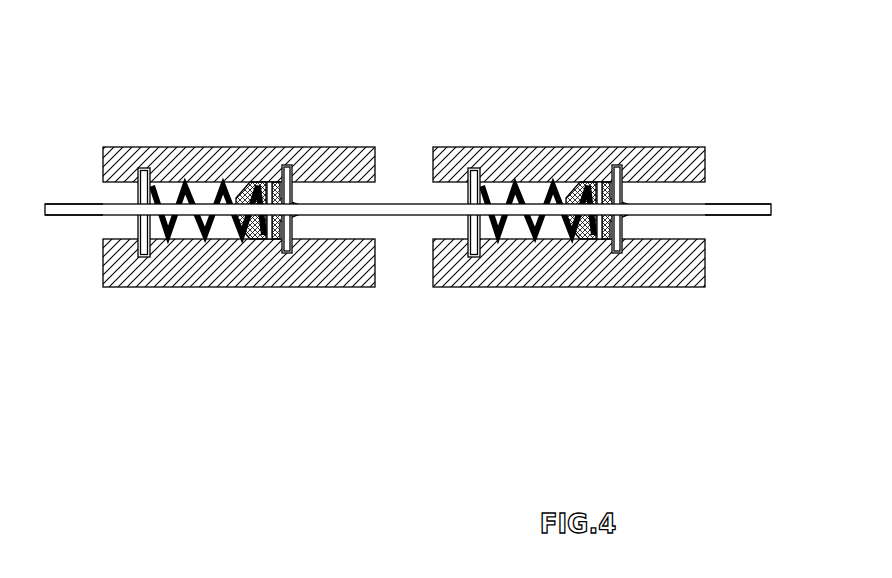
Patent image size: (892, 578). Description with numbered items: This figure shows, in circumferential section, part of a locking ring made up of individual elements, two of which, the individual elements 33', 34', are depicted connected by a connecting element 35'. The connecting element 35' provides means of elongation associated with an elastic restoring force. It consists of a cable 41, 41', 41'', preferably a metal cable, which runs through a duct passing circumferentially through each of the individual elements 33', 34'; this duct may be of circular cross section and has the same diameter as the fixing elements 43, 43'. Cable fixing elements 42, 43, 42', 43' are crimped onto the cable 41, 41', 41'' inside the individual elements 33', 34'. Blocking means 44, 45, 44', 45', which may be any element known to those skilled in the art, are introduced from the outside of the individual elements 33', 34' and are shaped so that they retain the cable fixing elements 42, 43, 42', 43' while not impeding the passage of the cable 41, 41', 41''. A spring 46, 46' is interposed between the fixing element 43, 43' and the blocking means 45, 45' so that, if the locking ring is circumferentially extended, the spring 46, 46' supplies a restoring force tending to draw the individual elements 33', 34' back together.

The individual element 33' is at (213, 249).
The individual element 34' is at (569, 259).
The connecting element 35' is at (445, 81).
The cable 41 is at (408, 276).
The cable 41' is at (65, 154).
The cable 41'' is at (738, 153).
The cable fixing element 42 is at (257, 270).
The cable fixing element 42' is at (626, 264).
The cable fixing element 43 is at (597, 171).
The cable fixing element 43' is at (268, 157).
The blocking means 44 is at (316, 179).
The blocking means 44' is at (646, 180).
The blocking means 45 is at (470, 267).
The blocking means 45' is at (142, 260).
The spring 46 is at (538, 154).
The spring 46' is at (208, 148).